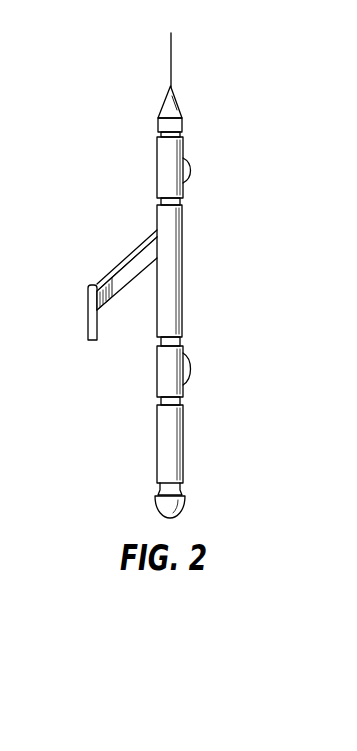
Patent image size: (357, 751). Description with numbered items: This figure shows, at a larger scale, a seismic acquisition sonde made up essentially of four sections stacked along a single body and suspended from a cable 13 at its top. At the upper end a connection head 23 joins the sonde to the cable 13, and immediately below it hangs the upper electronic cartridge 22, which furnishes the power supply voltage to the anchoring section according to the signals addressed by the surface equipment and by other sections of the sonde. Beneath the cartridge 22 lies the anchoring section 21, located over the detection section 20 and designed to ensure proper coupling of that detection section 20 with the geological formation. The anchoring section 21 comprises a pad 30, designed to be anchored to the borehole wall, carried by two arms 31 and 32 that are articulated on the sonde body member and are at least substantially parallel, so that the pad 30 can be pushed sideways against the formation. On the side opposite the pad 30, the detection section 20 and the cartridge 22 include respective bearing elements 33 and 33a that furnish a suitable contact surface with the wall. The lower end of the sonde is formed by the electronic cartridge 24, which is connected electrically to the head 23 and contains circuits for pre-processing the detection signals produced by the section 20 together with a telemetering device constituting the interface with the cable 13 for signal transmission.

The cable 13 is at (171, 50).
The connection head 23 is at (163, 107).
The upper electronic cartridge 22 is at (157, 178).
The bearing element 33a is at (190, 167).
The anchoring section 21 is at (170, 268).
The bearing element 33 is at (190, 372).
The detection section 20 is at (176, 389).
The electronic cartridge 24 is at (165, 452).
The arm 32 is at (122, 277).
The arm 31 is at (132, 287).
The pad 30 is at (88, 325).